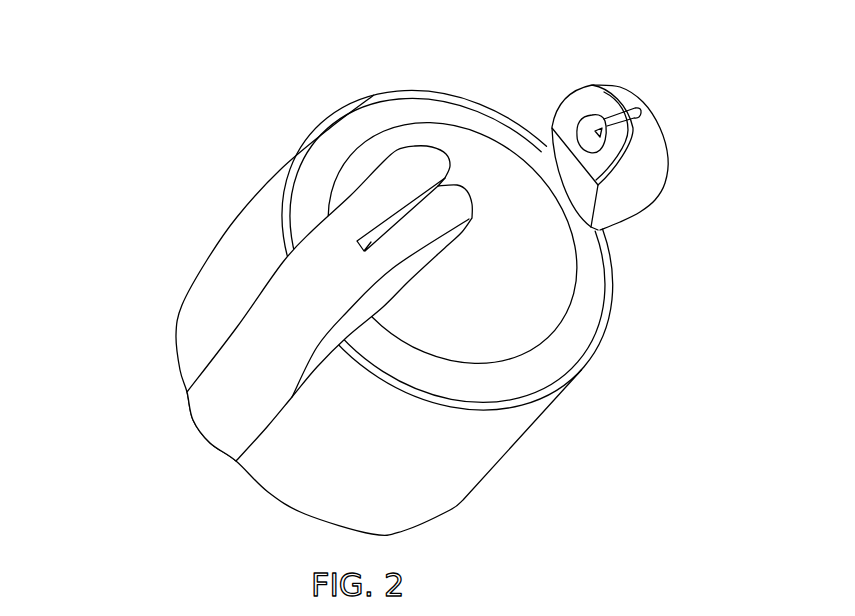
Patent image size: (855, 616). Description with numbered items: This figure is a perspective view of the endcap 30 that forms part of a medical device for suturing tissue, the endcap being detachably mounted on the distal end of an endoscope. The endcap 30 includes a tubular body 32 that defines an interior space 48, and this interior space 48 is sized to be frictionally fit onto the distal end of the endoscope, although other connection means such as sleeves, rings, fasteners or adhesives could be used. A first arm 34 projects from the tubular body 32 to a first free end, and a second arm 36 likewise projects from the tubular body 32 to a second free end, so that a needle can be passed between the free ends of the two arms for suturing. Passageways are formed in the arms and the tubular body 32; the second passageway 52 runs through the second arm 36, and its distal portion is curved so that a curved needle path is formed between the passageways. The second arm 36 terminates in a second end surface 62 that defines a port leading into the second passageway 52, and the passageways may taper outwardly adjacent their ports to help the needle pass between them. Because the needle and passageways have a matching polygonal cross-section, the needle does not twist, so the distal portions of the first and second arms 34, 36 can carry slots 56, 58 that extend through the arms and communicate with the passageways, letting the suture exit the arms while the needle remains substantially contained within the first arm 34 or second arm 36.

The endcap 30 is at (584, 442).
The tubular body 32 is at (257, 233).
The first arm 34 is at (295, 299).
The second arm 36 is at (648, 165).
The interior space 48 is at (476, 293).
The second passageway 52 is at (585, 115).
The slot 56 is at (420, 203).
The slot 58 is at (629, 107).
The second end surface 62 is at (565, 128).